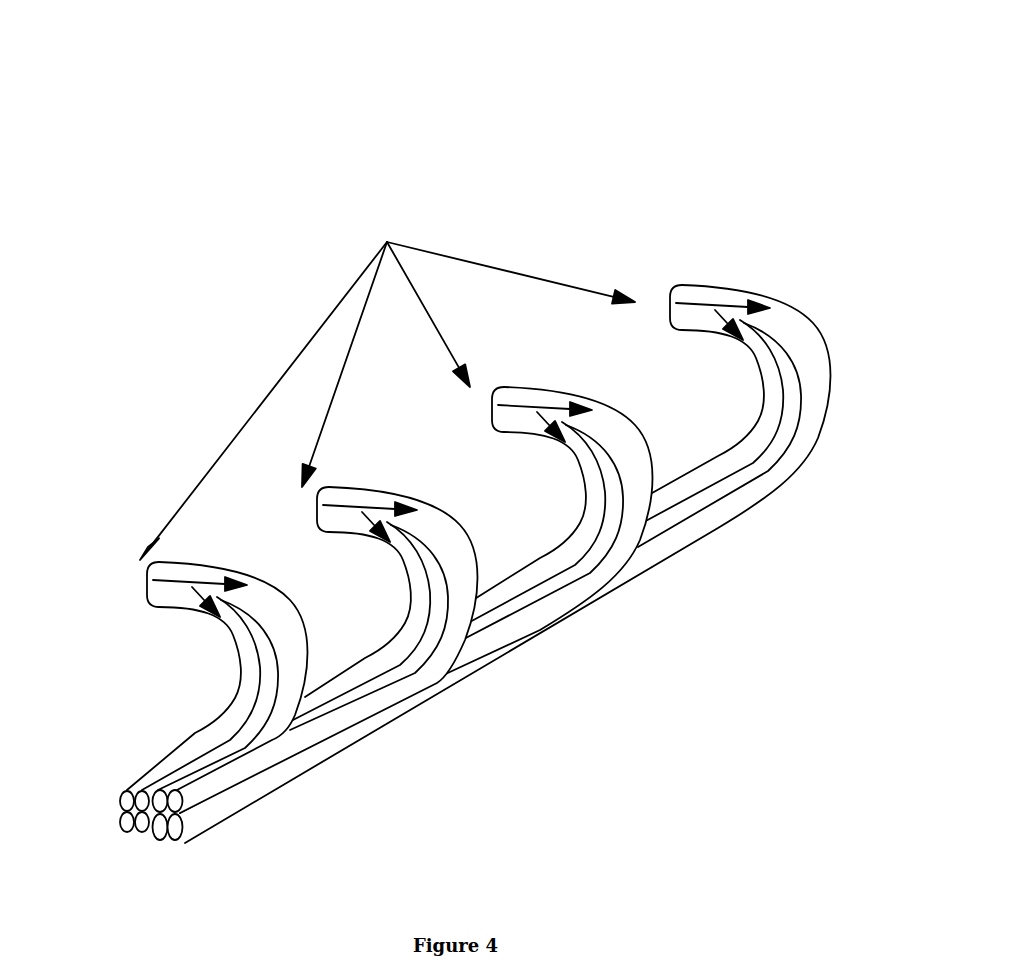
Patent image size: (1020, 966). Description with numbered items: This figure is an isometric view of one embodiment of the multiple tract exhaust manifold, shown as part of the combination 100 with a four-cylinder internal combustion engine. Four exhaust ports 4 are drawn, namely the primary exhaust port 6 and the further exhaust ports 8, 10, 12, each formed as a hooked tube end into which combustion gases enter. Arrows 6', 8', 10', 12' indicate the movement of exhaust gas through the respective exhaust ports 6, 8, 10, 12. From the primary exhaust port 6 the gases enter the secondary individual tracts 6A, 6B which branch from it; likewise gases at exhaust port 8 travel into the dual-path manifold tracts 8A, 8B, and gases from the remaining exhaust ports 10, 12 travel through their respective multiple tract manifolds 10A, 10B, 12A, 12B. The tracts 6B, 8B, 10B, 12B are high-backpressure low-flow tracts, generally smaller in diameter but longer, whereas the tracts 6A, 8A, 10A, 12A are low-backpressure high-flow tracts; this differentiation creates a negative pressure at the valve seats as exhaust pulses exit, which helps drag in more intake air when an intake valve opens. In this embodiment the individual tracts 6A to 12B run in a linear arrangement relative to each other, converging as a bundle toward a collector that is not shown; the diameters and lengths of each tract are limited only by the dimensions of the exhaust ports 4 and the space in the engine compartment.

The combination 100 is at (680, 94).
The exhaust ports 4 is at (387, 242).
The primary exhaust port 6 is at (490, 540).
The arrow 6' is at (719, 392).
The individual tract 6A is at (832, 386).
The individual tract 6B is at (760, 412).
The exhaust port 8 is at (396, 594).
The arrow 8' is at (542, 491).
The dual-path manifold tract 8A is at (630, 558).
The dual-path manifold tract 8B is at (562, 540).
The exhaust port 10 is at (309, 650).
The arrow 10' is at (369, 586).
The multiple tract manifold 10A is at (443, 677).
The multiple tract manifold 10B is at (405, 610).
The exhaust port 12 is at (183, 676).
The arrow 12' is at (208, 683).
The multiple tract manifold 12A is at (280, 743).
The multiple tract manifold 12B is at (238, 660).